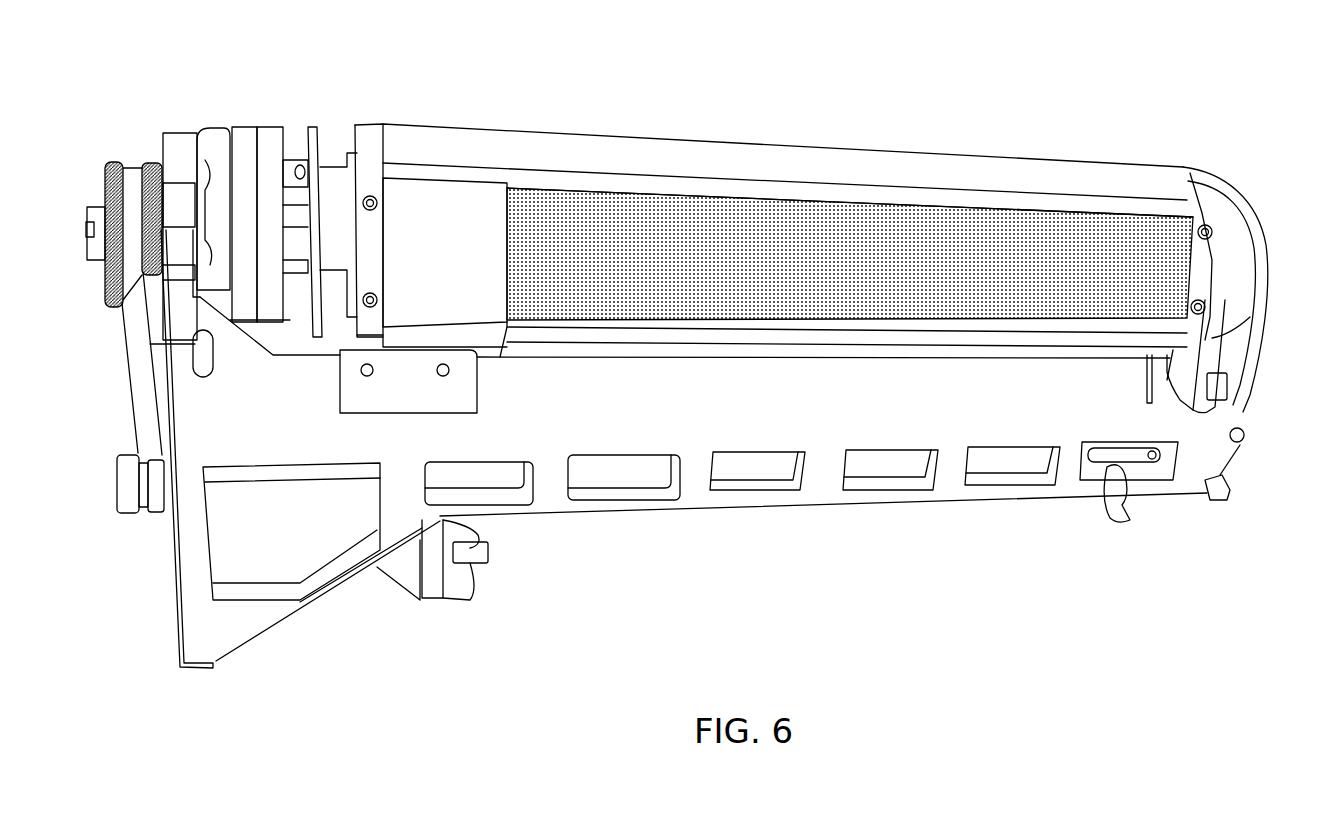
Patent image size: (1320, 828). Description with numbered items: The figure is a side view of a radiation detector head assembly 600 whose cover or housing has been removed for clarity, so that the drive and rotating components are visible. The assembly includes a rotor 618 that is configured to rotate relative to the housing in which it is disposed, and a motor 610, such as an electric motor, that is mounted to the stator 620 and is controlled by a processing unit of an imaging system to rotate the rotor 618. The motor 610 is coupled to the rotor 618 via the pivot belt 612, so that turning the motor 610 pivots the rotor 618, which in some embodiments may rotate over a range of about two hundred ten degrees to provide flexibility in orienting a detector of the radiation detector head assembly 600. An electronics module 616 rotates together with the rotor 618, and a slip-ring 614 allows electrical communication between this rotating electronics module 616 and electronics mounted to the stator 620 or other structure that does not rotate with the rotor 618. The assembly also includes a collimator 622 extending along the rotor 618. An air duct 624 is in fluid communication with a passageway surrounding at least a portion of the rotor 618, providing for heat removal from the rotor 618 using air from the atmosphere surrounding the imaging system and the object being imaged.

The radiation detector head assembly 600 is at (1186, 97).
The motor 610 is at (260, 562).
The pivot belt 612 is at (130, 160).
The slip-ring 614 is at (245, 127).
The electronics module 616 is at (313, 127).
The rotor 618 is at (443, 197).
The stator 620 is at (762, 500).
The collimator 622 is at (928, 200).
The air duct 624 is at (1225, 170).